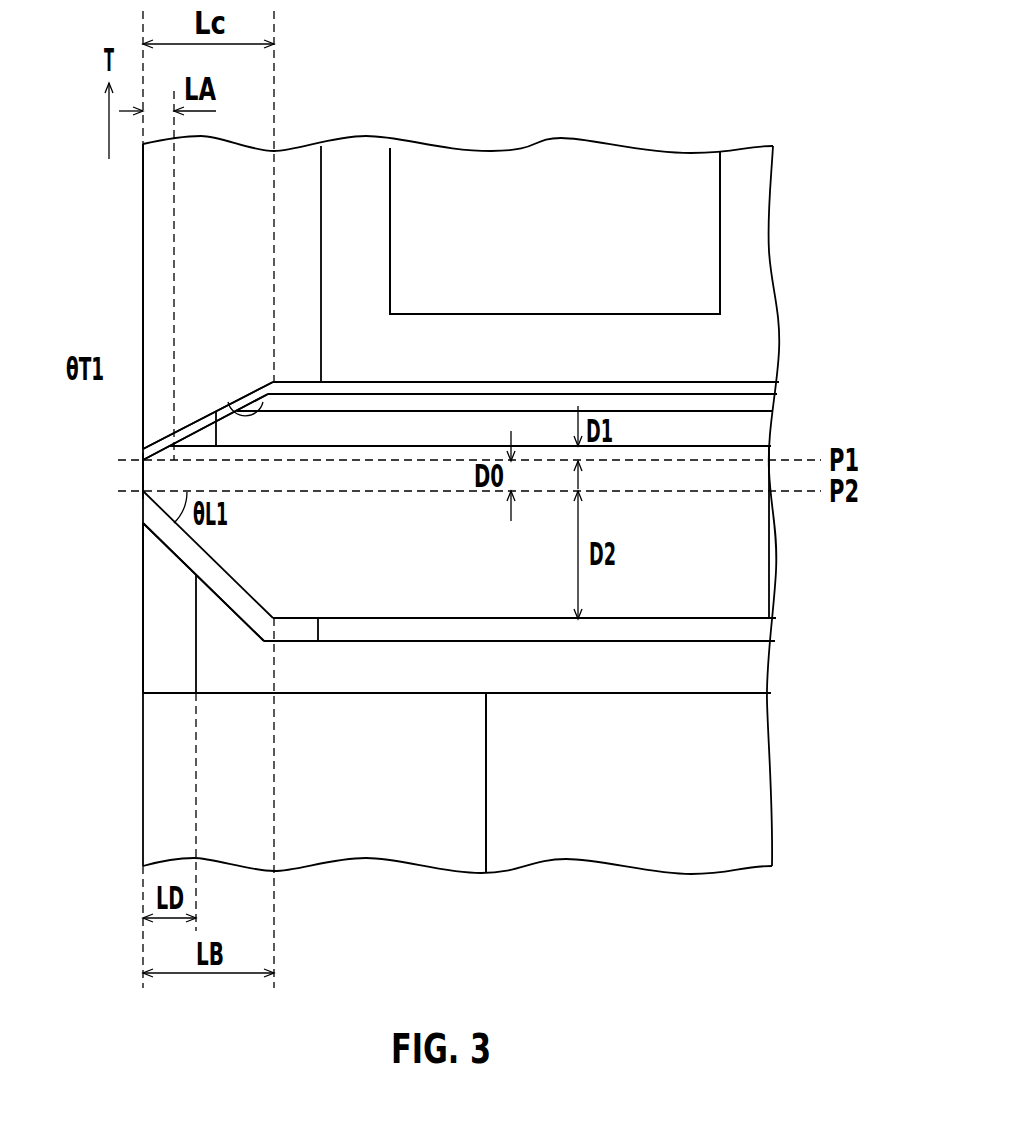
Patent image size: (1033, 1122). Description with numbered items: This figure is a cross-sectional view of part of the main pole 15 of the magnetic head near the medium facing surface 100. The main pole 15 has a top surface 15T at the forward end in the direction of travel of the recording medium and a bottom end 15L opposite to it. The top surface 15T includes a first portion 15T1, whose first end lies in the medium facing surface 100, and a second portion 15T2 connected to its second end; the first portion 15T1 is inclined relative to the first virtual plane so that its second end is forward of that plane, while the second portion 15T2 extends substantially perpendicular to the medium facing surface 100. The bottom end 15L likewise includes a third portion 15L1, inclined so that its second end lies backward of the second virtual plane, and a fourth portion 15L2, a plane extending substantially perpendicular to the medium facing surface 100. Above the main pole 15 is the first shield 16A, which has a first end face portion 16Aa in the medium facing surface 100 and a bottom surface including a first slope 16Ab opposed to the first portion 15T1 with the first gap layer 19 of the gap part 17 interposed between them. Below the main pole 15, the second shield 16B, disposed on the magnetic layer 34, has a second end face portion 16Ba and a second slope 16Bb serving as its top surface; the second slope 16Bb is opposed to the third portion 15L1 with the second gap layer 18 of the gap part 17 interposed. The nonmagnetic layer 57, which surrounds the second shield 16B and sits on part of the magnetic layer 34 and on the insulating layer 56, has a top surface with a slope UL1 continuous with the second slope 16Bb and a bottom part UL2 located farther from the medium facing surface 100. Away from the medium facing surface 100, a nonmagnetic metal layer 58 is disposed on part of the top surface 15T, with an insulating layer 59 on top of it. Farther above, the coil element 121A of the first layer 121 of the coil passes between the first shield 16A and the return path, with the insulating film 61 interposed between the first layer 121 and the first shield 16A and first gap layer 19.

The medium facing surface 100 is at (142, 191).
The first shield 16A is at (153, 213).
The first end face portion 16Aa is at (142, 250).
The first slope 16Ab is at (267, 382).
The first layer 121 is at (555, 177).
The coil element 121A is at (487, 150).
The insulating film 61 is at (763, 363).
The insulating layer 59 is at (763, 402).
The nonmagnetic metal layer 58 is at (770, 432).
The top surface 15T is at (690, 446).
The first portion 15T1 is at (188, 425).
The second portion 15T2 is at (215, 407).
The gap part 17 is at (75, 477).
The first gap layer 19 is at (142, 457).
The second gap layer 18 is at (142, 491).
The main pole 15 is at (763, 543).
The third portion 15L1 is at (203, 550).
The bottom end 15L is at (703, 620).
The fourth portion 15L2 is at (317, 641).
The slope UL1 is at (214, 599).
The bottom part UL2 is at (636, 641).
The second slope 16Bb is at (160, 540).
The second shield 16B is at (157, 627).
The second end face portion 16Ba is at (142, 662).
The nonmagnetic layer 57 is at (198, 675).
The magnetic layer 34 is at (325, 857).
The insulating layer 56 is at (607, 855).